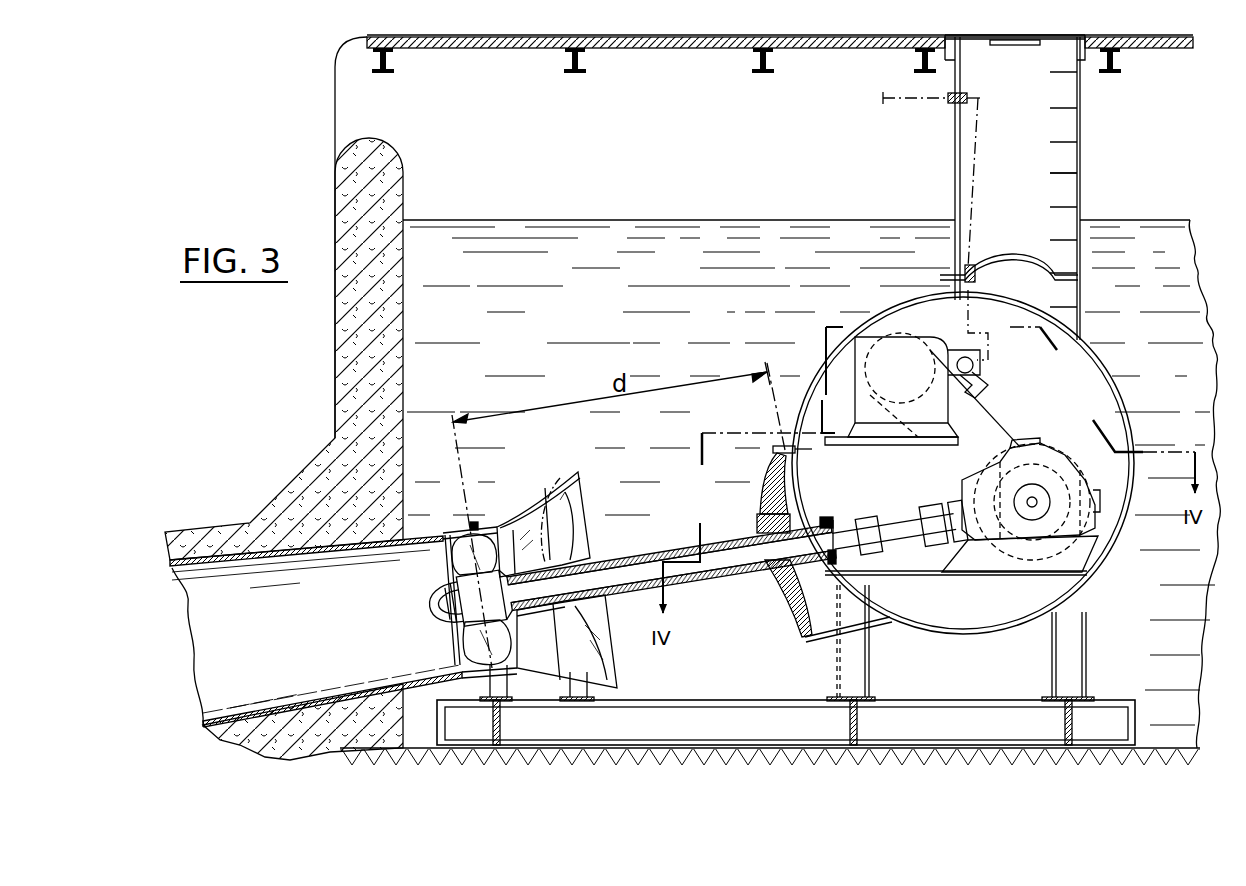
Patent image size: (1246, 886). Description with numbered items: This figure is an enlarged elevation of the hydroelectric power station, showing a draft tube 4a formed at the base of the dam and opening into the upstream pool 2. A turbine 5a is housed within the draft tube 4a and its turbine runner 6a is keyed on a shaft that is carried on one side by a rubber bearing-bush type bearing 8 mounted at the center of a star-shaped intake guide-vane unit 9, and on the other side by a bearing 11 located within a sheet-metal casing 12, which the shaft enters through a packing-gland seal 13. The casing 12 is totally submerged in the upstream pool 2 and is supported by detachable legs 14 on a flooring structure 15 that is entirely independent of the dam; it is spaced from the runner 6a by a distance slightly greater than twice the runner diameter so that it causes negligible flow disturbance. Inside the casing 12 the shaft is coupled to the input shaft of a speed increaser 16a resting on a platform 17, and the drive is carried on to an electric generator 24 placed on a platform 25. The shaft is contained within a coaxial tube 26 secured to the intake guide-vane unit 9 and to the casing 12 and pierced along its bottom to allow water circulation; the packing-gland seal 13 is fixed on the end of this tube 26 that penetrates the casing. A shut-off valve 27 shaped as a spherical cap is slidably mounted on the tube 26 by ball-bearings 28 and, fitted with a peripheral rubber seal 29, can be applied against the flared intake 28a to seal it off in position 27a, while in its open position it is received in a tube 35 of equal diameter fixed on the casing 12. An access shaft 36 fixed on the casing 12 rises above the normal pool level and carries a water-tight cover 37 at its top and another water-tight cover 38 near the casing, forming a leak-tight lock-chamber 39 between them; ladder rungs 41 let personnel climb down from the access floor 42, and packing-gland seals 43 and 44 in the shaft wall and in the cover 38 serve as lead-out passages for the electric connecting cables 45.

The upstream pool 2 is at (770, 240).
The draft tube 4a is at (222, 552).
The turbine 5a is at (498, 515).
The turbine runner 6a is at (463, 540).
The bearing 8 is at (525, 605).
The intake guide-vane unit 9 is at (515, 526).
The bearing 11 is at (903, 498).
The casing 12 is at (1130, 405).
The packing-gland seal 13 is at (825, 516).
The legs 14 is at (866, 665).
The flooring structure 15 is at (960, 714).
The speed increaser 16a is at (1052, 455).
The platform 17 is at (950, 576).
The electric generator 24 is at (926, 346).
The platform 25 is at (903, 444).
The coaxial tube 26 is at (676, 594).
The shut-off valve 27 is at (753, 500).
The closed position of shut-off valve 27a is at (565, 545).
The ball-bearings 28 is at (757, 523).
The flared intake 28a is at (557, 483).
The peripheral rubber seal 29 is at (770, 445).
The tube 35 is at (808, 640).
The access shaft 36 is at (956, 146).
The water-tight cover 37 is at (1070, 36).
The water-tight cover 38 is at (1025, 256).
The lock-chamber 39 is at (1080, 160).
The ladder rungs 41 is at (1058, 176).
The access floor 42 is at (655, 48).
The packing-gland seal 43 is at (950, 104).
The packing-gland seal 44 is at (975, 264).
The electric connecting cables 45 is at (975, 136).